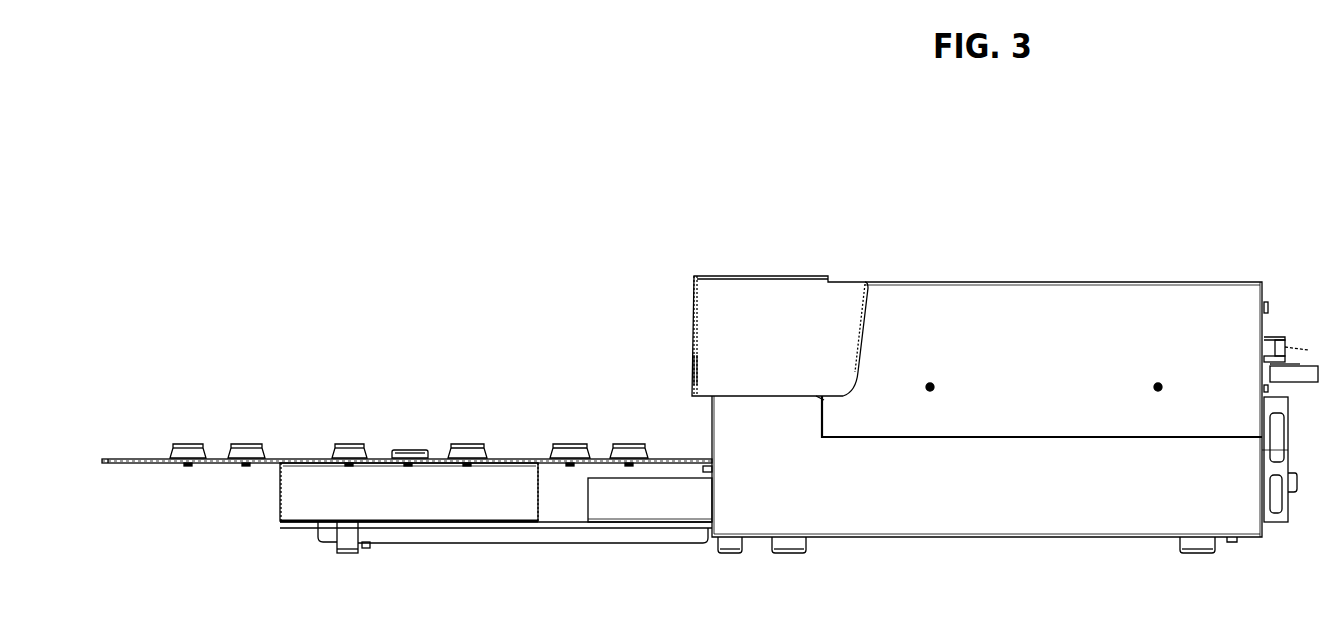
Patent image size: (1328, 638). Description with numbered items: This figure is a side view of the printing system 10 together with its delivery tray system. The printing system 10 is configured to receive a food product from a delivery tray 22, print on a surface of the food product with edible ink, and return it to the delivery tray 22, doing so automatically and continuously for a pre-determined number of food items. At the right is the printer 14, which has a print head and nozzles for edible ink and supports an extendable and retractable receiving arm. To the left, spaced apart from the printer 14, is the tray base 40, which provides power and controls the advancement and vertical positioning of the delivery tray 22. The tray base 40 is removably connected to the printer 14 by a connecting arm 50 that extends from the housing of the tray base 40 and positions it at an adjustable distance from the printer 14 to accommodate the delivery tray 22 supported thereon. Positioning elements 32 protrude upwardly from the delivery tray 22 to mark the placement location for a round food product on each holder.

The printing system 10 is at (240, 199).
The printer 14 is at (663, 241).
The delivery tray 22 is at (297, 428).
The positioning elements 32 is at (186, 444).
The tray base 40 is at (278, 537).
The connecting arm 50 is at (537, 557).